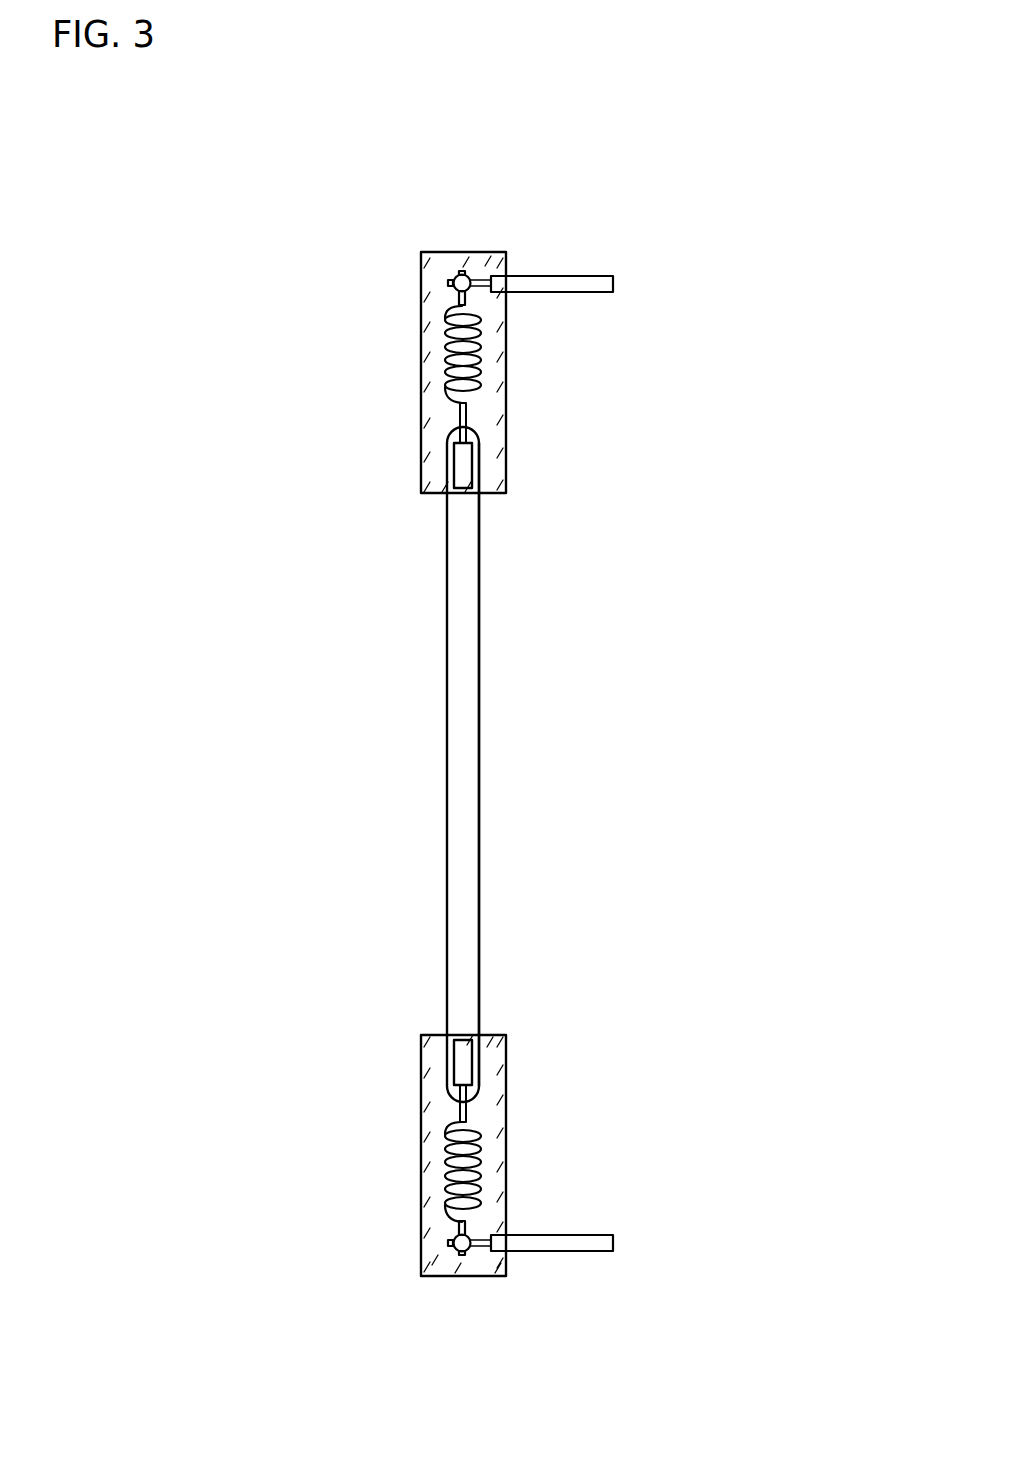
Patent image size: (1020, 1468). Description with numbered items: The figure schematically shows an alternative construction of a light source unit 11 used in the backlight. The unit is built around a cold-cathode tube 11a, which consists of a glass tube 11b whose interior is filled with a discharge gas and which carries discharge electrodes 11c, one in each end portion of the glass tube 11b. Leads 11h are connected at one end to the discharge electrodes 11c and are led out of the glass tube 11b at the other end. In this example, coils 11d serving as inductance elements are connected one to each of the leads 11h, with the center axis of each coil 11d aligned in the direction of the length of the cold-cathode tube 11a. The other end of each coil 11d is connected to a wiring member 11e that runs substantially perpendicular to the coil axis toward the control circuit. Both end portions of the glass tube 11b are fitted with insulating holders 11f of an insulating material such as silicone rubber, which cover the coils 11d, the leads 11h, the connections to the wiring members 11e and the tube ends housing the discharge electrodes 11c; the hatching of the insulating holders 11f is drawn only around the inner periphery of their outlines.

The light source unit 11 is at (427, 813).
The cold-cathode tube 11a is at (489, 731).
The glass tube 11b is at (480, 607).
The discharge electrode 11c is at (465, 472).
The coil 11d is at (482, 340).
The wiring member 11e is at (588, 283).
The insulating holder 11f is at (482, 268).
The lead 11h is at (467, 410).